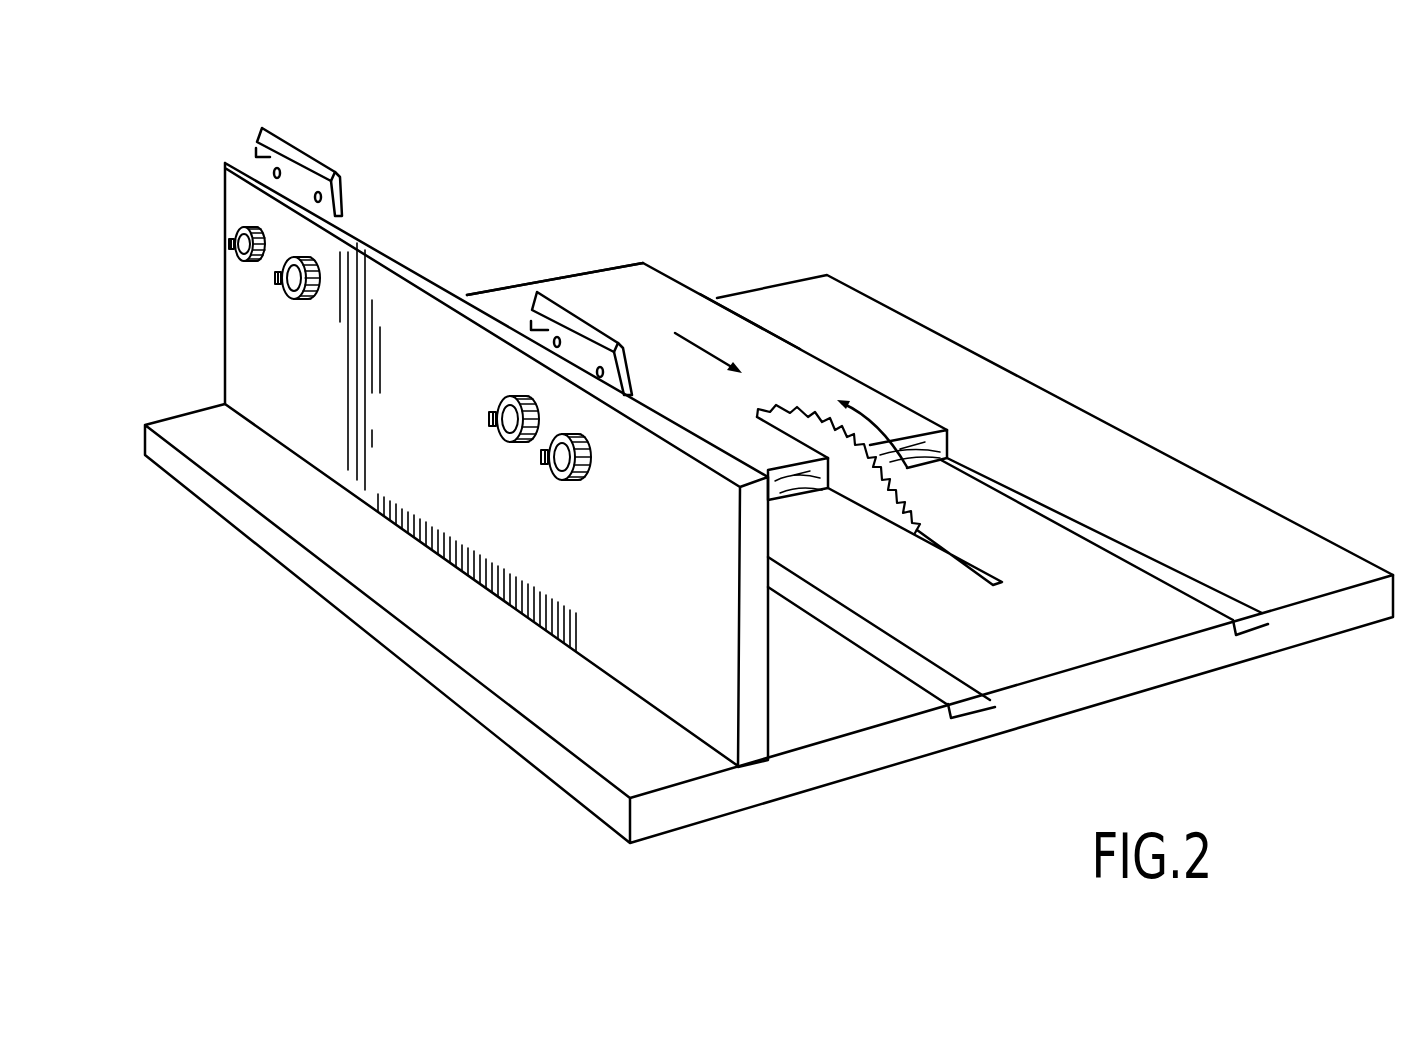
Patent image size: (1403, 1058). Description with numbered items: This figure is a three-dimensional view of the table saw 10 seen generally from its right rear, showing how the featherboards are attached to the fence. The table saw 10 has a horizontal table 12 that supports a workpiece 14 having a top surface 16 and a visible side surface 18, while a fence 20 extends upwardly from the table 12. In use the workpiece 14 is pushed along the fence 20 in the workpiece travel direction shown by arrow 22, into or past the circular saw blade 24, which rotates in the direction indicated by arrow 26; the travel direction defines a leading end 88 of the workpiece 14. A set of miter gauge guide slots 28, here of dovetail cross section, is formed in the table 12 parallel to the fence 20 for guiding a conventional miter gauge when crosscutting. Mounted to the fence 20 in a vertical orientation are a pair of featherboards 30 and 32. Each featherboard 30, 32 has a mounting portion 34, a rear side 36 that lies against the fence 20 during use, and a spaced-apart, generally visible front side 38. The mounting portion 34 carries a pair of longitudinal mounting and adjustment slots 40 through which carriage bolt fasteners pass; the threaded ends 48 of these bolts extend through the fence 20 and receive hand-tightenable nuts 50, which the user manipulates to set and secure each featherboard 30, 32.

The table saw 10 is at (1045, 241).
The table 12 is at (1075, 597).
The workpiece 14 is at (665, 288).
The top surface 16 is at (628, 266).
The visible side surface 18 is at (767, 328).
The fence 20 is at (403, 256).
The workpiece travel direction arrow 22 is at (697, 340).
The circular saw blade 24 is at (827, 425).
The arrow 26 is at (892, 434).
The miter gauge guide slots 28 is at (948, 683).
The featherboard 30 is at (340, 133).
The featherboard 32 is at (589, 300).
The mounting portion 34 is at (299, 184).
The rear side 36 is at (262, 156).
The front side 38 is at (343, 192).
The longitudinal mounting and adjustment slots 40 is at (318, 202).
The threaded ends 48 is at (232, 242).
The hand-tightenable nuts 50 is at (232, 253).
The leading end 88 is at (927, 450).